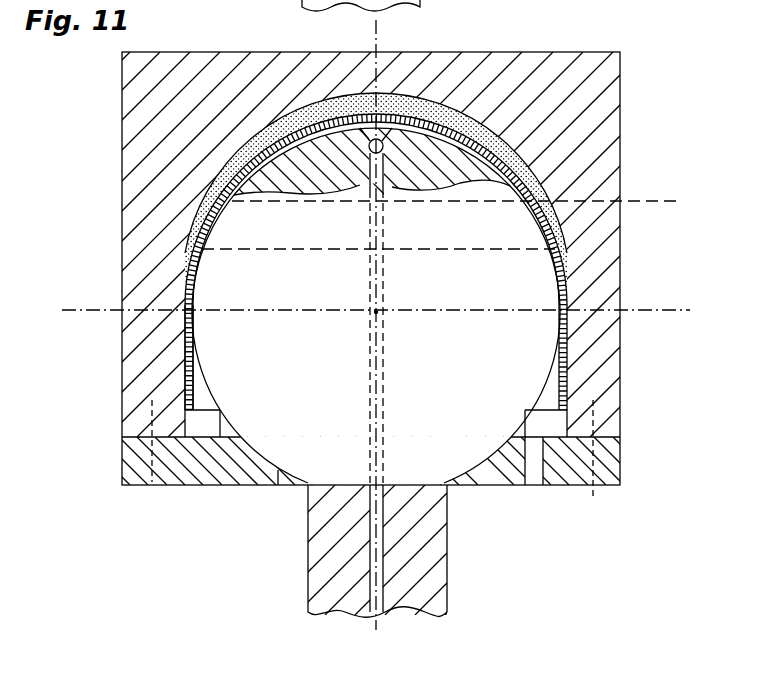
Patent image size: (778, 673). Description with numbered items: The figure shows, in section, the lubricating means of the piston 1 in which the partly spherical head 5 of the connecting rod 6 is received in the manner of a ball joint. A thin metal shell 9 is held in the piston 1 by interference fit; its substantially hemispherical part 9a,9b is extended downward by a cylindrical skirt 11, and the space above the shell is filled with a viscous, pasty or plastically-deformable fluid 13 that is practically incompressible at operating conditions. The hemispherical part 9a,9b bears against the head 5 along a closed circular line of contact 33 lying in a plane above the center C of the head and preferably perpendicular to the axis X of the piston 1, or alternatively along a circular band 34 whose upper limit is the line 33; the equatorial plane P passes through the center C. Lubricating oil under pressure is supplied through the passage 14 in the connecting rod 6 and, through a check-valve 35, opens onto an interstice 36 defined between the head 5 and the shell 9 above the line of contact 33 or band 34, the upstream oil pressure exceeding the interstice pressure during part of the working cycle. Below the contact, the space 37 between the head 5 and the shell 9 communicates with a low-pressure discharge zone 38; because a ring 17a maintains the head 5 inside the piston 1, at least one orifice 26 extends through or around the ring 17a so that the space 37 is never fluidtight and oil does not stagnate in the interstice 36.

The piston 1 is at (121, 205).
The partly spherical head 5 is at (497, 230).
The connecting rod 6 is at (328, 582).
The thin metal shell 9 is at (268, 147).
The substantially hemispherical part 9a,9b is at (452, 157).
The cylindrical skirt 11 is at (185, 357).
The viscous, pasty or plastically-deformable fluid 13 is at (333, 100).
The passage 14 is at (380, 546).
The ring 17a is at (210, 477).
The outlet orifice 26 is at (538, 480).
The closed circular line of contact 33 is at (446, 203).
The circular band 34 is at (300, 203).
The check-valve 35 is at (389, 155).
The interstice 36 is at (460, 137).
The space 37 is at (548, 423).
The discharge zone 38 is at (563, 572).
The axis X is at (386, 333).
The equatorial plane P is at (367, 303).
The center C is at (378, 312).